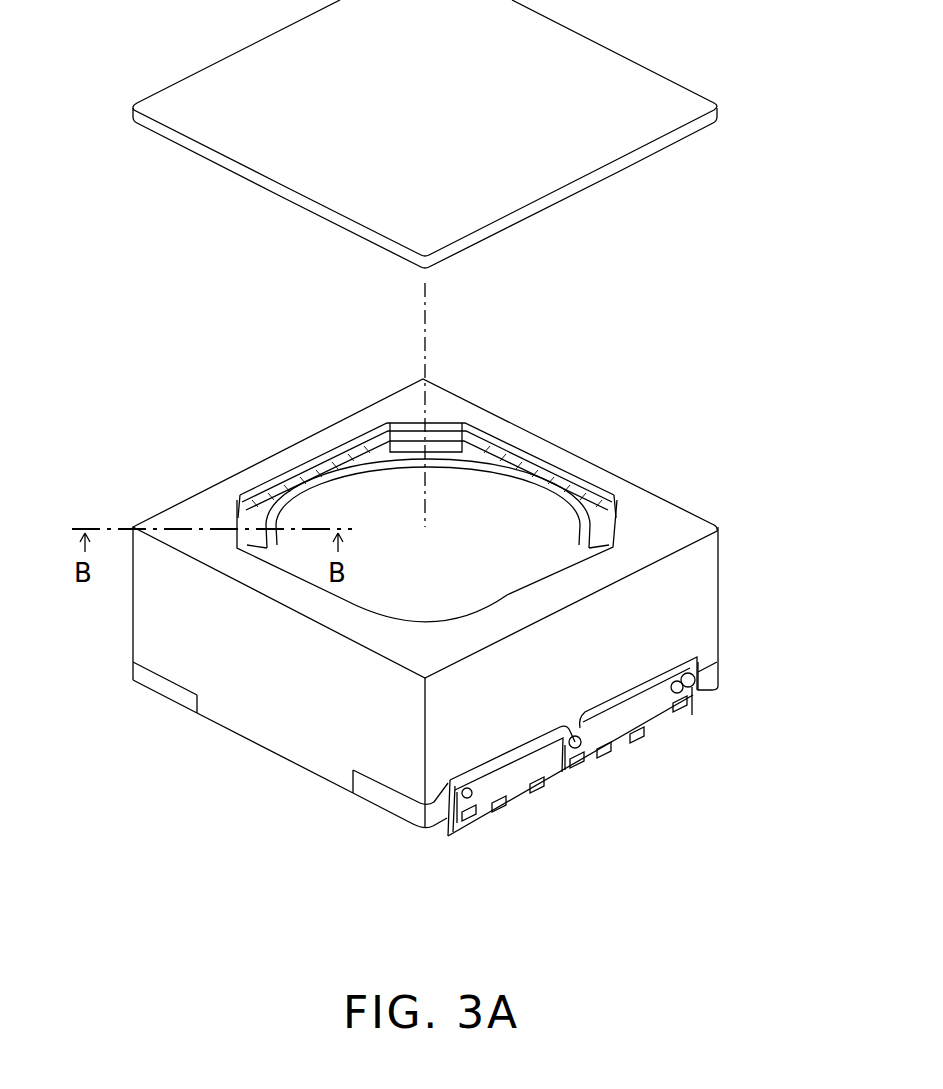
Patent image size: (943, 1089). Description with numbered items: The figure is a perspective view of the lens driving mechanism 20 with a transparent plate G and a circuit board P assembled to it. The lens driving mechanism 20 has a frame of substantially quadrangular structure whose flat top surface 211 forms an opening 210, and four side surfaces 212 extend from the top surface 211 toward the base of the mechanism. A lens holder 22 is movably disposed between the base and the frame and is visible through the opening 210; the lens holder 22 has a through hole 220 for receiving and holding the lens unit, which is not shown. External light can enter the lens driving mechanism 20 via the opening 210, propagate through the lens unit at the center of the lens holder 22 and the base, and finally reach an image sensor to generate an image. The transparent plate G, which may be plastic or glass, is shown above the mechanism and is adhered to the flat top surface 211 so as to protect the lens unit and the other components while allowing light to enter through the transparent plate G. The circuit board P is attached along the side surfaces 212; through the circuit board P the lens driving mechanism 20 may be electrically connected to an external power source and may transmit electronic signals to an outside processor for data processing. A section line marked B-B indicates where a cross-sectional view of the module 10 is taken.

The transparent plate G is at (668, 108).
The camera module 10 is at (426, 594).
The lens driving mechanism 20 is at (426, 590).
The opening 210 is at (515, 447).
The top surface 211 is at (205, 512).
The side surfaces 212 is at (690, 610).
The through hole 220 is at (452, 607).
The lens holder 22 is at (333, 512).
The circuit board P is at (610, 732).